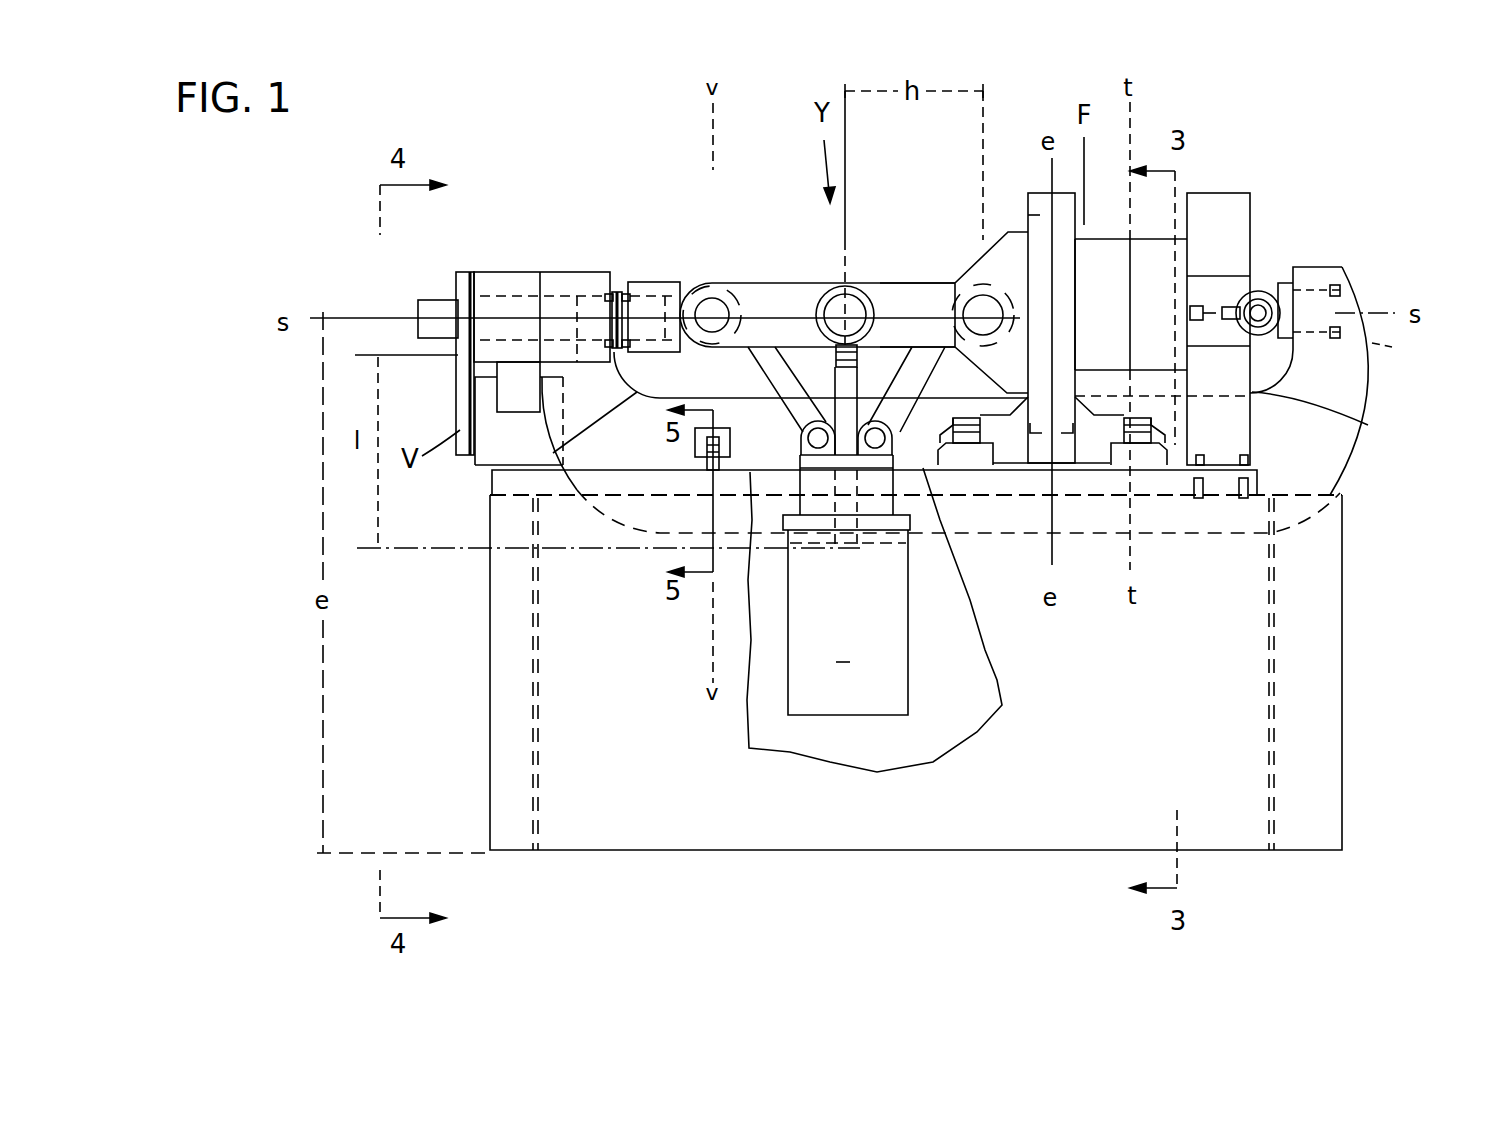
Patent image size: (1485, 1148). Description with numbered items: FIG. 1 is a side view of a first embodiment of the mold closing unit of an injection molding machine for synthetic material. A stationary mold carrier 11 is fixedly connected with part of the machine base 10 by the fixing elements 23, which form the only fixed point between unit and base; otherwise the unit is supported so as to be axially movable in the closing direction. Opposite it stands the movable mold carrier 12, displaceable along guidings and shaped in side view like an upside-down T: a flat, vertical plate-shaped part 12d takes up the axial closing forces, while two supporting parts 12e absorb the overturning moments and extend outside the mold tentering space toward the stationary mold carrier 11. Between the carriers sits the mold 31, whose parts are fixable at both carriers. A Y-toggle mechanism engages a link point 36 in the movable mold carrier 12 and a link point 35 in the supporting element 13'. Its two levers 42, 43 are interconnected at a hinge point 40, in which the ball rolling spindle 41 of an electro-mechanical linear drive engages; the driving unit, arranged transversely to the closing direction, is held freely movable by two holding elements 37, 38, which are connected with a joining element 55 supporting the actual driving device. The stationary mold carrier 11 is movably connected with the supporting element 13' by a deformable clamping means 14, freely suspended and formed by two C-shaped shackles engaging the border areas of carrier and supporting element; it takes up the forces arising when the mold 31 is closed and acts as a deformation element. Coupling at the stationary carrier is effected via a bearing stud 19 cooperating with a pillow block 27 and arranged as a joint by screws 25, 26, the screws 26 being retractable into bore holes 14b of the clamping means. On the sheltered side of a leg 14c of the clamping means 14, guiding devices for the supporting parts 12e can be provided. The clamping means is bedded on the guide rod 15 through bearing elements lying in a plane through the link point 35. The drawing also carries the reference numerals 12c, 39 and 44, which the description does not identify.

The machine base 10 is at (1115, 722).
The stationary mold carrier 11 is at (1235, 203).
The movable mold carrier 12 is at (1035, 190).
The column foot 12c is at (968, 455).
The plate-shaped part 12d is at (1030, 215).
The supporting parts 12e is at (1082, 444).
The supporting element 13' is at (790, 367).
The clamping means 14 is at (1380, 412).
The bore holes 14b is at (1416, 346).
The leg 14c is at (785, 463).
The guide rod 15 is at (618, 486).
The bearing stud 19 is at (1270, 325).
The fixing elements 23 is at (1262, 483).
The screws 25 is at (1210, 286).
The screws 26 is at (1337, 268).
The pillow block 27 is at (1270, 300).
The mold 31 is at (1158, 263).
The link point 35 is at (711, 308).
The link point 36 is at (981, 308).
The holding element 37 is at (760, 378).
The holding element 38 is at (923, 389).
The shaft 39 is at (433, 306).
The hinge point 40 is at (848, 312).
The ball rolling spindle 41 is at (848, 410).
The lever 42 is at (776, 291).
The lever 43 is at (912, 296).
The motor 44 is at (500, 282).
The joining element 55 is at (887, 455).